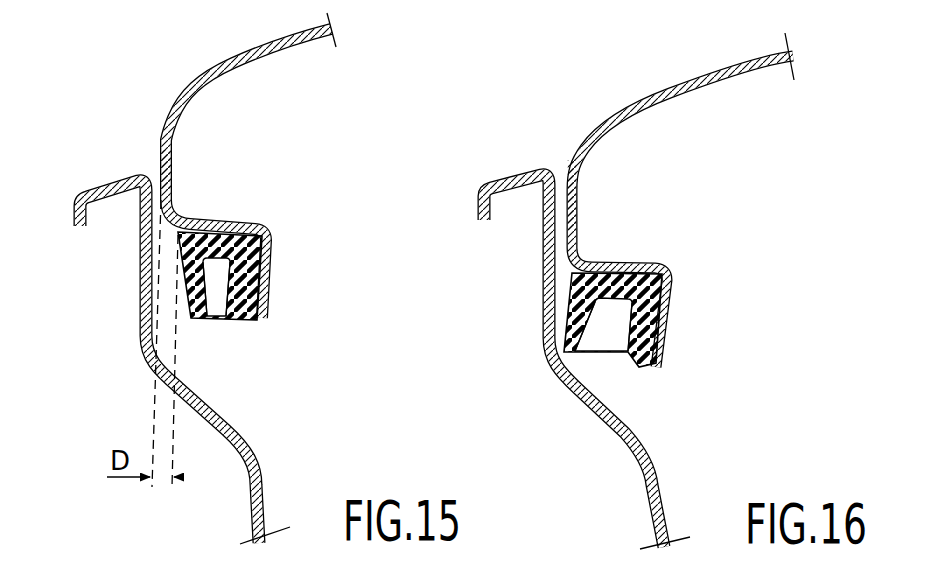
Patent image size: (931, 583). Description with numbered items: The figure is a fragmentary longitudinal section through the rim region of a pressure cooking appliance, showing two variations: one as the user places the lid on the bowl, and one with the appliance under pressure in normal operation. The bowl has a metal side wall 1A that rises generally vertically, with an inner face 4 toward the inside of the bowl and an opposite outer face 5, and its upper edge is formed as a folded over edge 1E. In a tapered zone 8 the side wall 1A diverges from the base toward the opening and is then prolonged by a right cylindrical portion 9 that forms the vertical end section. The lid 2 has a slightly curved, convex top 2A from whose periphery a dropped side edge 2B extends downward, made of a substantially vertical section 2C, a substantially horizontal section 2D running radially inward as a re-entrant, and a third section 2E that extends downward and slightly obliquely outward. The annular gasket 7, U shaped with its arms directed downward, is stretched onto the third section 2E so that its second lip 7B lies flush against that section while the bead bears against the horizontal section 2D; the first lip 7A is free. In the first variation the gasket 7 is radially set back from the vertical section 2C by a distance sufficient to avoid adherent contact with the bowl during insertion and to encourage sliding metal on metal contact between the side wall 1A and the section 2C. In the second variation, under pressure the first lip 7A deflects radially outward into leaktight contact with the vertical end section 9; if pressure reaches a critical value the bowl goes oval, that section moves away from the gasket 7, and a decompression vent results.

In FIG. 15, the side wall 1A is at (229, 437).
In FIG. 16, the side wall 1A is at (648, 453).
In FIG. 15, the folded over edge 1E is at (80, 193).
In FIG. 16, the folded over edge 1E is at (480, 191).
In FIG. 15, the lid 2 is at (186, 84).
In FIG. 16, the lid 2 is at (646, 92).
In FIG. 15, the top 2A is at (269, 45).
In FIG. 16, the top 2A is at (742, 62).
In FIG. 15, the dropped side edge 2B is at (190, 160).
In FIG. 16, the dropped side edge 2B is at (602, 194).
In FIG. 15, the substantially vertical section 2C is at (173, 187).
In FIG. 16, the substantially vertical section 2C is at (583, 220).
In FIG. 15, the substantially horizontal section 2D is at (222, 223).
In FIG. 16, the substantially horizontal section 2D is at (620, 263).
In FIG. 15, the third section 2E is at (273, 284).
In FIG. 16, the third section 2E is at (662, 333).
In FIG. 15, the inner face 4 is at (265, 487).
In FIG. 16, the inner face 4 is at (672, 486).
In FIG. 15, the outer face 5 is at (248, 512).
In FIG. 16, the outer face 5 is at (648, 507).
In FIG. 15, the annular gasket 7 is at (266, 266).
In FIG. 16, the annular gasket 7 is at (673, 293).
In FIG. 15, the first lip 7A is at (202, 319).
In FIG. 16, the first lip 7A is at (557, 318).
In FIG. 15, the second lip 7B is at (238, 320).
In FIG. 16, the second lip 7B is at (640, 364).
In FIG. 15, the tapered zone 8 is at (177, 393).
In FIG. 16, the tapered zone 8 is at (597, 413).
In FIG. 15, the right cylindrical portion 9 is at (141, 272).
In FIG. 16, the right cylindrical portion 9 is at (545, 248).